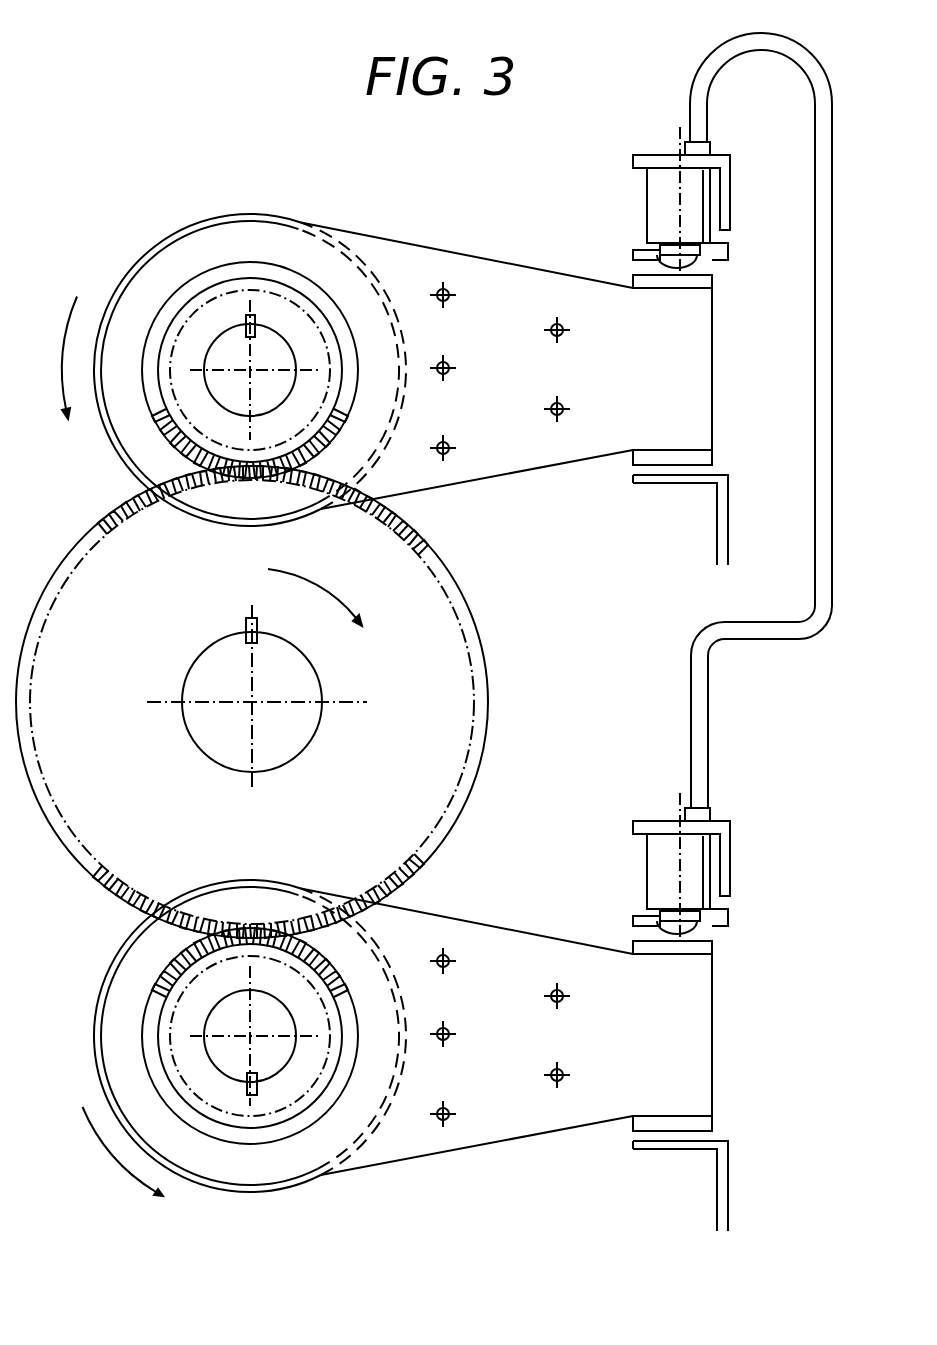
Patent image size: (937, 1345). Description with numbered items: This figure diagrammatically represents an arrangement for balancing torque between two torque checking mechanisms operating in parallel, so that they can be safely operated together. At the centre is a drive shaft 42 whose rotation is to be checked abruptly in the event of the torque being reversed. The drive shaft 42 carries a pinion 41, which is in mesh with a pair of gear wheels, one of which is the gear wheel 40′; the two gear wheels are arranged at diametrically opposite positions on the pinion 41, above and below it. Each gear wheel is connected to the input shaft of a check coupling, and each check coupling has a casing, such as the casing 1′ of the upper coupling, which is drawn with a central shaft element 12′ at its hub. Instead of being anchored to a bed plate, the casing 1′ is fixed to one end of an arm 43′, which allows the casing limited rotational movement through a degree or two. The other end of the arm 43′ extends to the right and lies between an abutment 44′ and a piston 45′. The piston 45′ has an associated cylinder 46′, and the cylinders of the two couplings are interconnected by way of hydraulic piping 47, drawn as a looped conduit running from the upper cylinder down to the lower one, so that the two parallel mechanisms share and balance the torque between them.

The casing 1′ is at (188, 218).
The roller shaft 12′ is at (228, 348).
The gear wheel 40′ is at (165, 425).
The pinion 41 is at (400, 568).
The drive shaft 42 is at (207, 728).
The arm 43′ is at (485, 298).
The abutment 44′ is at (668, 484).
The piston 45′ is at (640, 250).
The cylinder 46′ is at (657, 193).
The hydraulic piping 47 is at (790, 632).